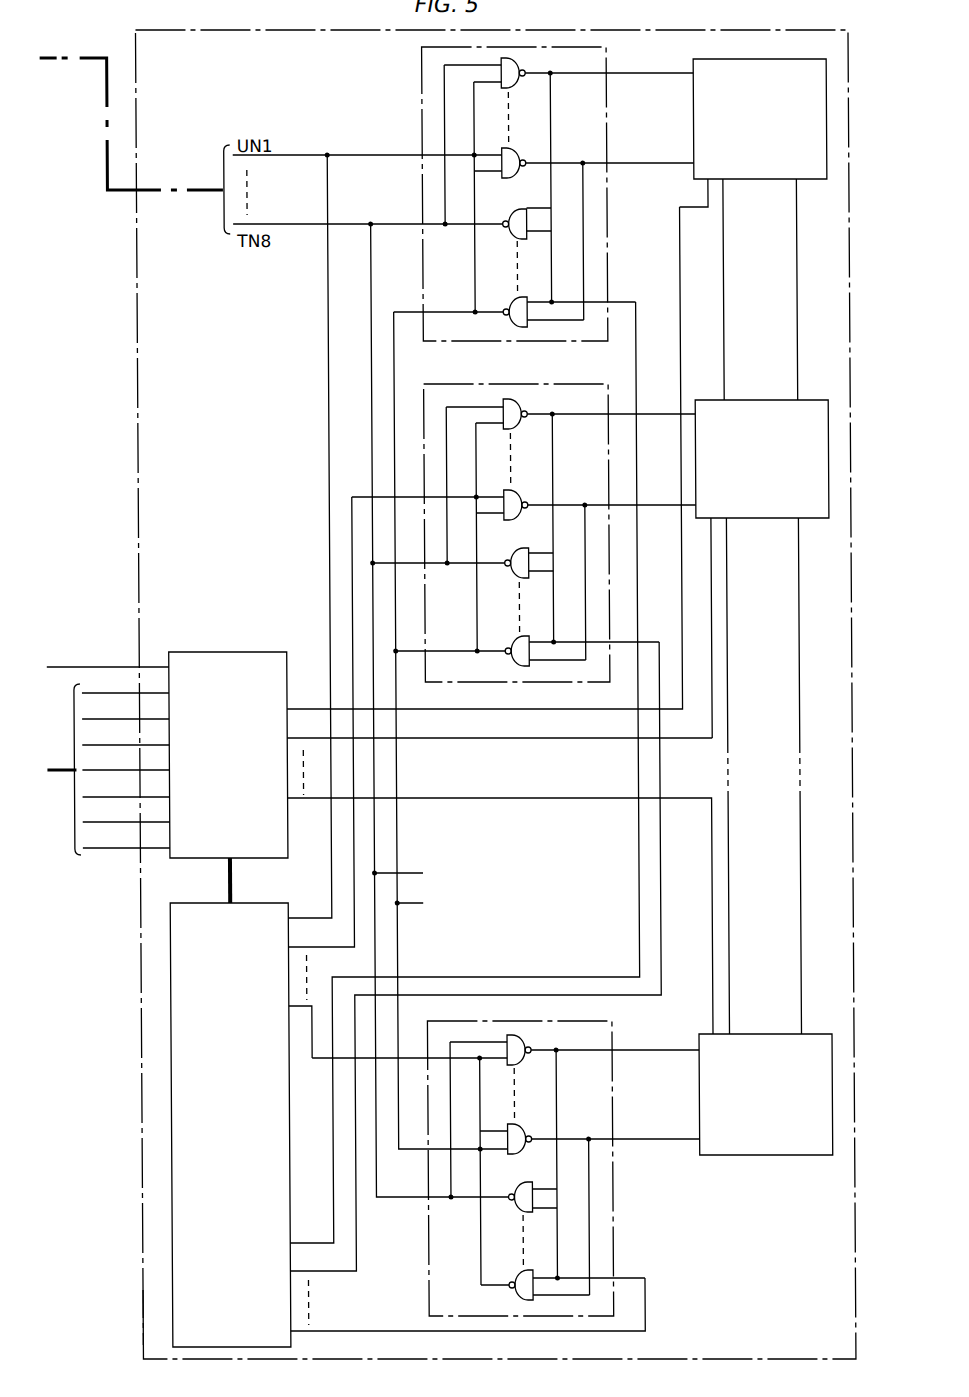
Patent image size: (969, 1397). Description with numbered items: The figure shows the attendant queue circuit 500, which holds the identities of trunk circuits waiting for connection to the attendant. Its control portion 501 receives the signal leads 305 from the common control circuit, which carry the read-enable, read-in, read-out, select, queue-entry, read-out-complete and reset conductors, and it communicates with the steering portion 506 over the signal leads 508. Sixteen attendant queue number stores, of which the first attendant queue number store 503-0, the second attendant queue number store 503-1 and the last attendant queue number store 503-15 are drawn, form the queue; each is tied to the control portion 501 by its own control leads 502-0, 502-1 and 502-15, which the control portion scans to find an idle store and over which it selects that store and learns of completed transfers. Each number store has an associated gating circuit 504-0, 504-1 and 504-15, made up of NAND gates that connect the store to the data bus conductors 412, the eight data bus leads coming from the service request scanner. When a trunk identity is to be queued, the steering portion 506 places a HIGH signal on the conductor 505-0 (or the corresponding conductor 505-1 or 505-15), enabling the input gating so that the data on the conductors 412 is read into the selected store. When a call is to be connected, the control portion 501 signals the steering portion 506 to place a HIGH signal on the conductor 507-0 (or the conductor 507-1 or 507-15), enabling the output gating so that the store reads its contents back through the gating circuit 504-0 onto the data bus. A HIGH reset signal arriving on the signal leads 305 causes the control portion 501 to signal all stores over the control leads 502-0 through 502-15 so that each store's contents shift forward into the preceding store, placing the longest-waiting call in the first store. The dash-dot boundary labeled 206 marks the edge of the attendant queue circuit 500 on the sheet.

The attendant queue circuit 500 is at (721, 30).
The conductors 412 is at (52, 58).
The control portion 501 is at (249, 652).
The control leads 502-0 is at (446, 709).
The control leads 502-1 is at (446, 738).
The control leads 502-15 is at (446, 798).
The attendant queue number store 503-0 is at (749, 60).
The attendant queue number store 503-1 is at (813, 400).
The attendant queue number store 503-15 is at (780, 1156).
The input gating circuit 504-0 is at (611, 47).
The input gating circuit 504-1 is at (543, 384).
The input gating circuit 504-15 is at (615, 1025).
The conductor 505-0 is at (331, 860).
The conductor 505-1 is at (353, 897).
The conductor 505-15 is at (310, 1000).
The steering portion 506 is at (208, 903).
The conductor 507-0 is at (514, 995).
The conductor 507-1 is at (434, 977).
The conductor 507-15 is at (338, 1331).
The signal leads 508 is at (227, 873).
The signal leads 305 is at (62, 775).
The attendant queue circuit boundary lead 206 is at (140, 1318).